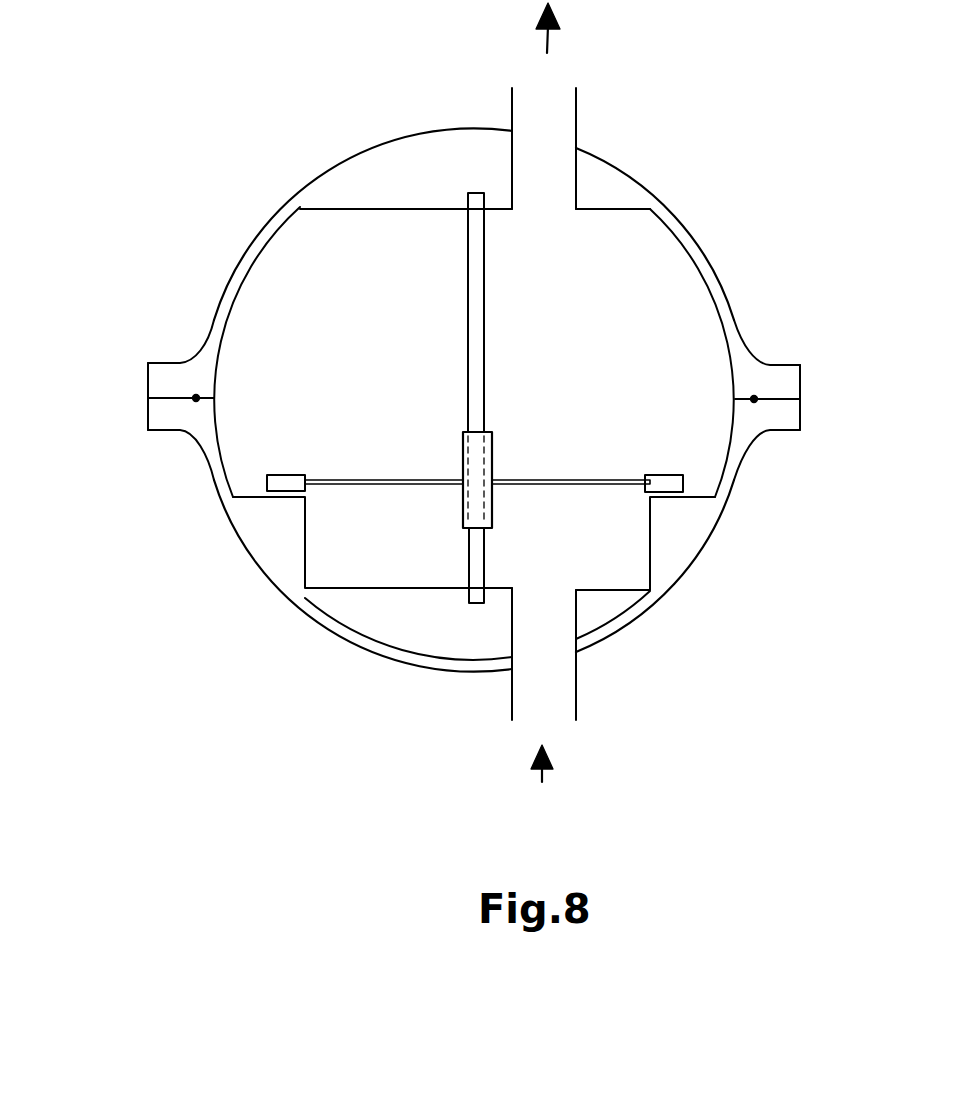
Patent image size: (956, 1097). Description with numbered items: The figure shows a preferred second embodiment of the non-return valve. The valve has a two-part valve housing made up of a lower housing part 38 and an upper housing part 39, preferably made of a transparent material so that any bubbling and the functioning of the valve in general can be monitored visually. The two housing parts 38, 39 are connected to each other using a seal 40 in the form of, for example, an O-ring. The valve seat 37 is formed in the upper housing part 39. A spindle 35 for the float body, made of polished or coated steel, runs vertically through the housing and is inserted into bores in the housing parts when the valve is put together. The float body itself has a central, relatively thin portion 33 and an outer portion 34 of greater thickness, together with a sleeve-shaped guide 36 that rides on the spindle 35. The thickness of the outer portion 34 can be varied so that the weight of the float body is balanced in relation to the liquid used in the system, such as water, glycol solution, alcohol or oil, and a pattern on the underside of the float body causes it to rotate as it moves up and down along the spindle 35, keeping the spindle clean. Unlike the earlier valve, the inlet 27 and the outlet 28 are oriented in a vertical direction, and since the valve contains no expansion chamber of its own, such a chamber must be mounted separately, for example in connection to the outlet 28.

The inlet 27 is at (560, 676).
The outlet 28 is at (562, 114).
The central portion of float body 33 is at (382, 480).
The outer portion of float body 34 is at (660, 480).
The spindle 35 is at (476, 342).
The sleeve-shaped guide 36 is at (475, 463).
The valve seat 37 is at (277, 497).
The lower housing part 38 is at (655, 598).
The upper housing part 39 is at (695, 248).
The seal 40 is at (198, 400).